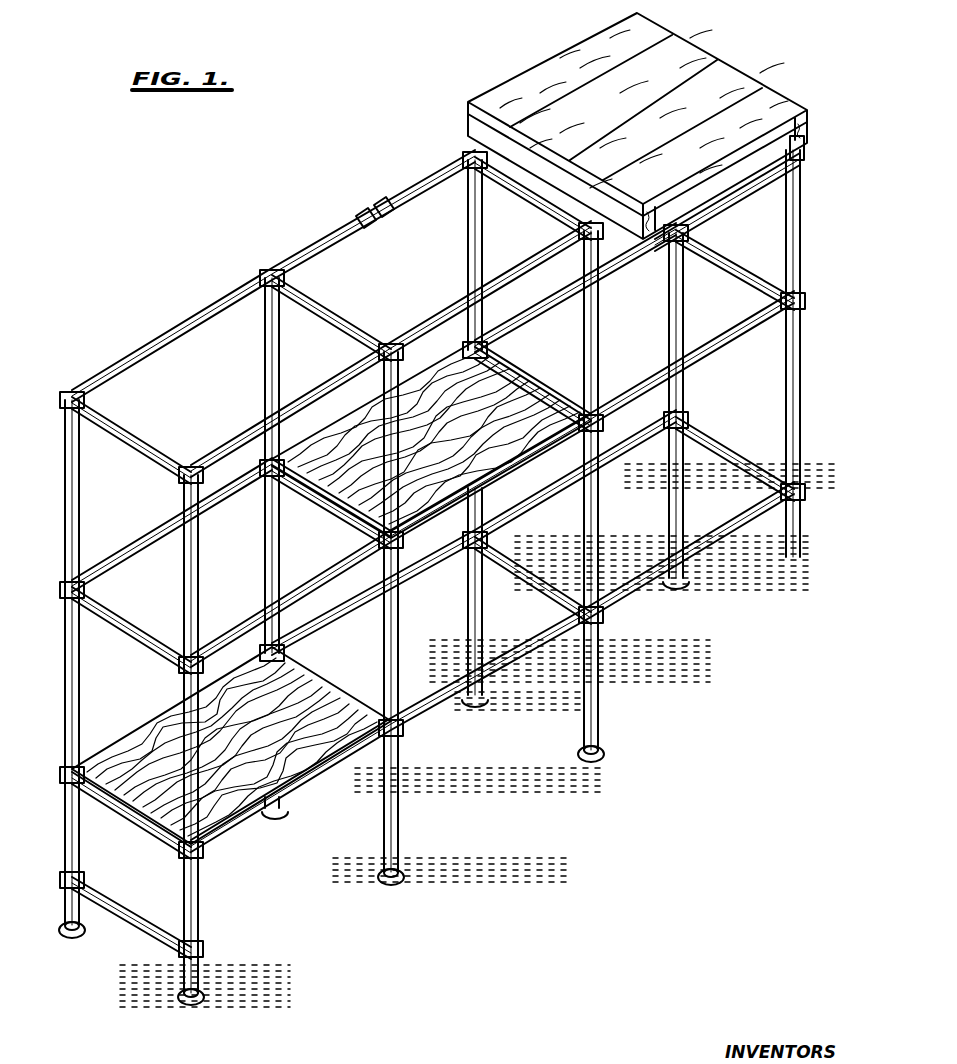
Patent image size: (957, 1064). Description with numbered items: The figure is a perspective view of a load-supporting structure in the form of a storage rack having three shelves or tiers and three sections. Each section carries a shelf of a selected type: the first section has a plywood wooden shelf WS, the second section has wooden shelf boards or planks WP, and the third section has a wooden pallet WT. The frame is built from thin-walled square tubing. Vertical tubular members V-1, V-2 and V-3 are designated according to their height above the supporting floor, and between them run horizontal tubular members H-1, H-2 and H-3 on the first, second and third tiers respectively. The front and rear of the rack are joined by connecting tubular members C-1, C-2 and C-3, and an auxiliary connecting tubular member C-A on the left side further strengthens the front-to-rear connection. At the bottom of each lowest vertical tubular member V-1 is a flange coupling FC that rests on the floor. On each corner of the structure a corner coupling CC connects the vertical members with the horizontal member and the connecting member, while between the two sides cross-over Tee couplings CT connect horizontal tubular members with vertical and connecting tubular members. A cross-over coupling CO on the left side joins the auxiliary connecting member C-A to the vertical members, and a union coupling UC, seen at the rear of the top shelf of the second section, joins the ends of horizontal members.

The wooden pallet WT is at (548, 83).
The cross-over Tee coupling CT is at (472, 161).
The union coupling UC is at (369, 223).
The vertical tubular member V-1 is at (681, 545).
The vertical tubular member V-2 is at (800, 401).
The vertical tubular member V-3 is at (471, 246).
The horizontal tubular member H-1 is at (332, 640).
The horizontal tubular member H-2 is at (655, 391).
The horizontal tubular member H-3 is at (468, 322).
The connecting tubular member C-1 is at (730, 439).
The connecting tubular member C-2 is at (745, 287).
The connecting tubular member C-3 is at (333, 317).
The auxiliary connecting tubular member C-A is at (130, 915).
The corner coupling CC is at (64, 403).
The cross-over coupling CO is at (200, 955).
The wooden shelf boards or planks WP is at (513, 383).
The wooden shelf WS is at (135, 743).
The flange coupling FC is at (590, 765).